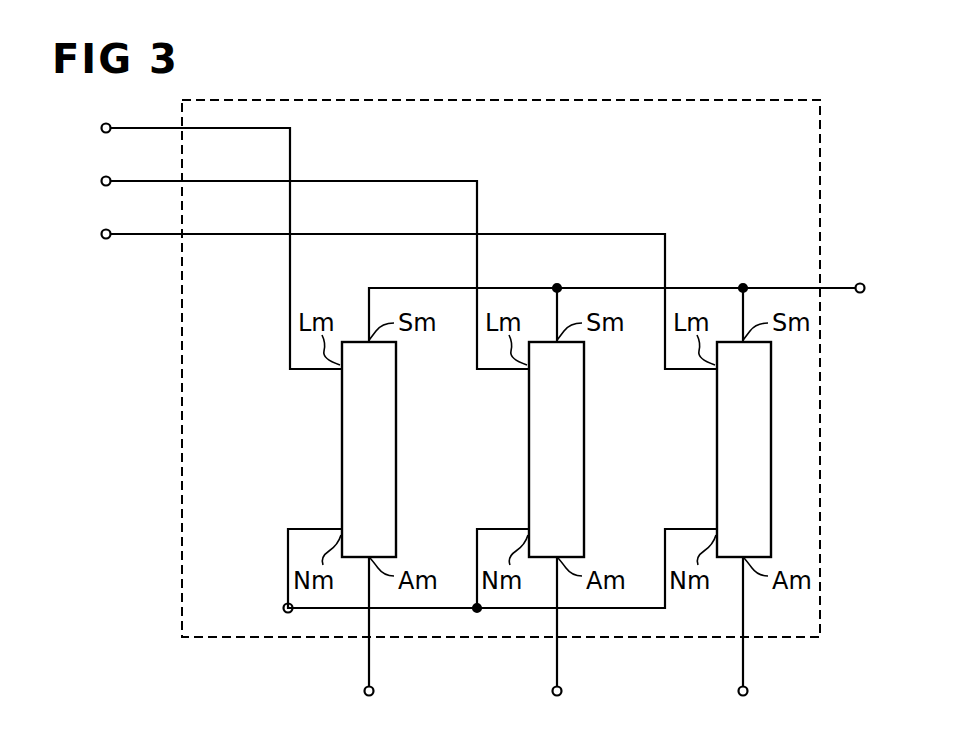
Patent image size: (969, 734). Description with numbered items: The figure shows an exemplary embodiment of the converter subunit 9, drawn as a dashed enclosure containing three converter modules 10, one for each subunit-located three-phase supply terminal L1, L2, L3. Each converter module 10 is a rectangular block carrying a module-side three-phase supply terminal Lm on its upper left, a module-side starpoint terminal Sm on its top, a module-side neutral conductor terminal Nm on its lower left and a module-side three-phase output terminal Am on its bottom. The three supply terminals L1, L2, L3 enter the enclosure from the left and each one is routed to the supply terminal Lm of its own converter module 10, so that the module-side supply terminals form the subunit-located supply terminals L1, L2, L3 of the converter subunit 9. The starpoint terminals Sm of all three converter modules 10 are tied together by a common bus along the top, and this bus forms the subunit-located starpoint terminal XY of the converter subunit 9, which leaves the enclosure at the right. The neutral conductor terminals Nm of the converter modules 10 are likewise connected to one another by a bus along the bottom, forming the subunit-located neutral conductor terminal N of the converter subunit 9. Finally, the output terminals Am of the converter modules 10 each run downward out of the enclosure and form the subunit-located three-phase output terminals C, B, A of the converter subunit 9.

The converter subunit 9 is at (180, 565).
The converter module 10 is at (342, 450).
The subunit-located three-phase supply terminal L1' L1 is at (101, 127).
The subunit-located three-phase supply terminal L2' L2 is at (101, 180).
The subunit-located three-phase supply terminal L3' L3 is at (101, 233).
The subunit-located neutral conductor terminal N is at (283, 607).
The subunit-located starpoint terminal X and Y XY is at (860, 283).
The subunit-located three-phase output terminal A' A is at (739, 691).
The subunit-located three-phase output terminal B' B is at (552, 691).
The subunit-located three-phase output terminal C' C is at (364, 691).